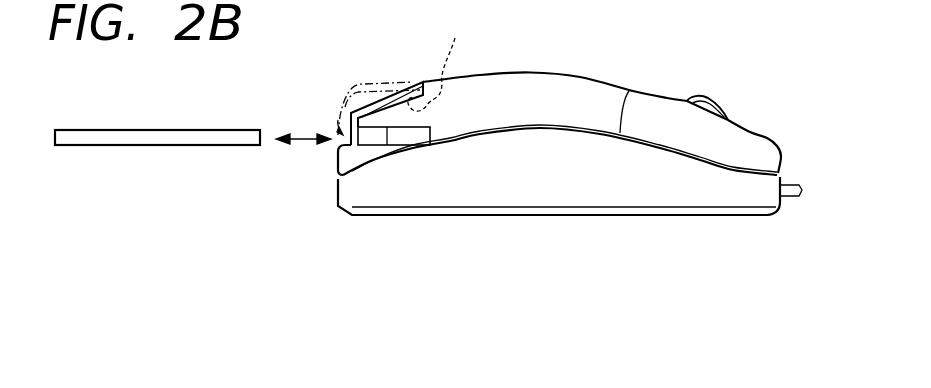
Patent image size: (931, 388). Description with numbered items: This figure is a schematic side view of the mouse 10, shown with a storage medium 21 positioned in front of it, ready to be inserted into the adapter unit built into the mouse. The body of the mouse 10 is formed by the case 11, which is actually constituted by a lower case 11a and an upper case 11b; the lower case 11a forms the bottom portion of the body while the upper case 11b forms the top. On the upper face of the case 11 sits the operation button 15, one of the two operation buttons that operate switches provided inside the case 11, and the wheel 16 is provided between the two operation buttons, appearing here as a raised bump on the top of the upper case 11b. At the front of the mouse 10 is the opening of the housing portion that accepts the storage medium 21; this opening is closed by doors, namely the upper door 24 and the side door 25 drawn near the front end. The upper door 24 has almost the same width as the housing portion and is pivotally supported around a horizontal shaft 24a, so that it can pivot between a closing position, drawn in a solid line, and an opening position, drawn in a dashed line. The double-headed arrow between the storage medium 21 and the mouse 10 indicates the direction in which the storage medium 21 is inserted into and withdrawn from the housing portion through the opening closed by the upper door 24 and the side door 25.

The mouse 10 is at (533, 153).
The case 11 is at (570, 204).
The lower case 11a is at (495, 183).
The upper case 11b is at (550, 115).
The operation button 15 is at (655, 103).
The wheel 16 is at (728, 114).
The storage medium 21 is at (141, 130).
The upper door 24 is at (383, 98).
The horizontal shaft 24a is at (442, 62).
The side door 25 is at (372, 138).